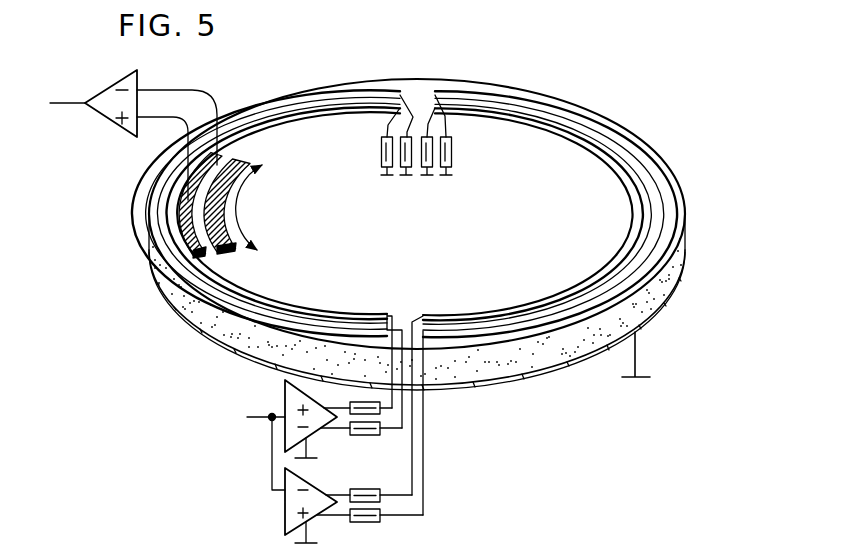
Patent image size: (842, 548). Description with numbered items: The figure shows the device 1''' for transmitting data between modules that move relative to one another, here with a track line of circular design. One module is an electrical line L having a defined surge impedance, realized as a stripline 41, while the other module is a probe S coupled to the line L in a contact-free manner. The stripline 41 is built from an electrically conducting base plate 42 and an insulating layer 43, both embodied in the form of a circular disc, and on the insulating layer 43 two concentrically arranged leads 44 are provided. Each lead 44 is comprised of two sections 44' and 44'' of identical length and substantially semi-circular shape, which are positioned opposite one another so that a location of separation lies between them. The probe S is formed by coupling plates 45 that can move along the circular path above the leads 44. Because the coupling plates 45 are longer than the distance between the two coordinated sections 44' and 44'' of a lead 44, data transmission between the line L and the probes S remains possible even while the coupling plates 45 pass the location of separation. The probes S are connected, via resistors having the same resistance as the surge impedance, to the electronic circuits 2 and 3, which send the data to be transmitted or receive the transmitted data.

The electrical line L is at (512, 83).
The stripline 41 is at (165, 313).
The electrically conducting base plate 42 is at (648, 321).
The insulating layer 43 is at (505, 362).
The lead 44 is at (578, 299).
The first lead section 44' is at (562, 303).
The second lead section 44'' is at (272, 259).
The probe S is at (172, 184).
The coupling plates 45 is at (196, 249).
The electronic circuit 2 is at (113, 80).
The electronic circuit 3 is at (285, 509).
The device 1''' is at (689, 397).